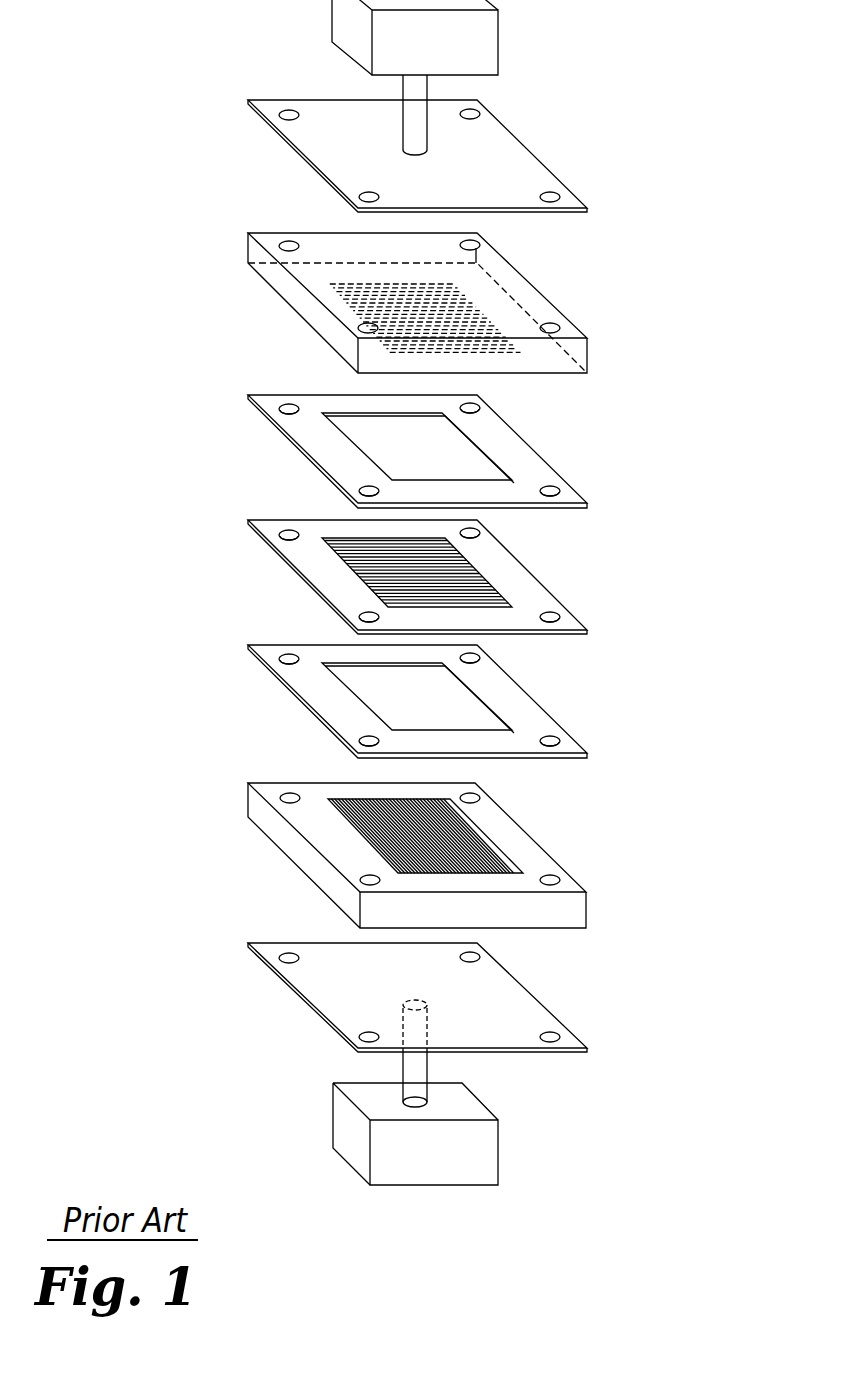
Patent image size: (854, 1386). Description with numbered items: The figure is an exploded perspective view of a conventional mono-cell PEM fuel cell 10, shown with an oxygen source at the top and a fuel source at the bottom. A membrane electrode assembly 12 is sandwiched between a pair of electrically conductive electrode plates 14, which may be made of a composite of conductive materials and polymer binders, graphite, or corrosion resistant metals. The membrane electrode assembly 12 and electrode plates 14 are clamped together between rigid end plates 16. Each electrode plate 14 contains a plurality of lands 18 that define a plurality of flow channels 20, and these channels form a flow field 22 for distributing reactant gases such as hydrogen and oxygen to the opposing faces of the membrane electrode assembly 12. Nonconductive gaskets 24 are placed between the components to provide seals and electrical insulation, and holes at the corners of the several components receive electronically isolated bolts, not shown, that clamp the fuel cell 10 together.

The mono-cell PEM fuel cell 10 is at (630, 260).
The membrane electrode assembly 12 is at (482, 577).
The electrode plates 14 is at (550, 303).
The end plates 16 is at (530, 150).
The lands 18 is at (333, 799).
The flow channels 20 is at (362, 800).
The flow field 22 is at (478, 865).
The nonconductive gaskets 24 is at (535, 450).